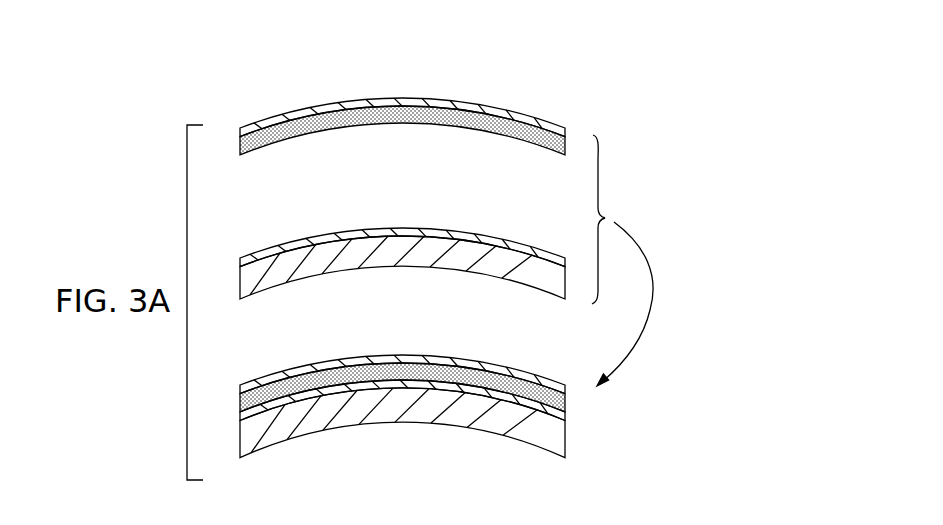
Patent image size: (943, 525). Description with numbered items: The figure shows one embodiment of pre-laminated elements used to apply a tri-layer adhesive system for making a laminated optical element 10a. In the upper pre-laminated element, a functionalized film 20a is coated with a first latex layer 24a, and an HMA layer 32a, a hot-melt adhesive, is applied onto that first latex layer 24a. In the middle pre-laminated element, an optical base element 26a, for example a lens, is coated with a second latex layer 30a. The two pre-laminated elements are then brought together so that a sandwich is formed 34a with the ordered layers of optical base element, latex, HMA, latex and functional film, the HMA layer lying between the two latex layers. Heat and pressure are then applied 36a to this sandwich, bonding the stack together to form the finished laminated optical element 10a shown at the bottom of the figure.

The laminated optical element 10a is at (600, 445).
The functionalized film 20a is at (402, 97).
The first latex layer 24a is at (442, 104).
The optical base element 26a is at (408, 266).
The second latex layer 30a is at (412, 228).
The HMA layer 32a is at (413, 125).
The sandwich formation 34a is at (650, 303).
The application of heat and pressure 36a is at (625, 304).